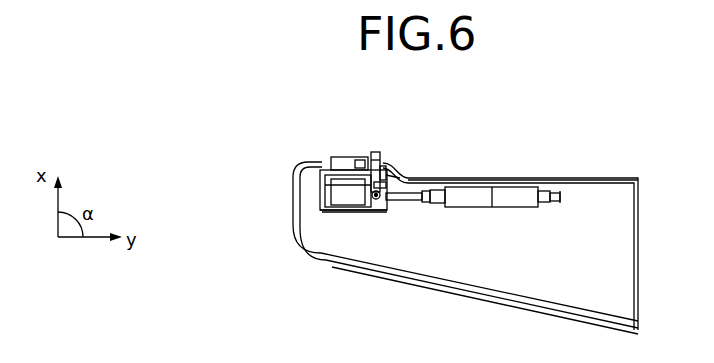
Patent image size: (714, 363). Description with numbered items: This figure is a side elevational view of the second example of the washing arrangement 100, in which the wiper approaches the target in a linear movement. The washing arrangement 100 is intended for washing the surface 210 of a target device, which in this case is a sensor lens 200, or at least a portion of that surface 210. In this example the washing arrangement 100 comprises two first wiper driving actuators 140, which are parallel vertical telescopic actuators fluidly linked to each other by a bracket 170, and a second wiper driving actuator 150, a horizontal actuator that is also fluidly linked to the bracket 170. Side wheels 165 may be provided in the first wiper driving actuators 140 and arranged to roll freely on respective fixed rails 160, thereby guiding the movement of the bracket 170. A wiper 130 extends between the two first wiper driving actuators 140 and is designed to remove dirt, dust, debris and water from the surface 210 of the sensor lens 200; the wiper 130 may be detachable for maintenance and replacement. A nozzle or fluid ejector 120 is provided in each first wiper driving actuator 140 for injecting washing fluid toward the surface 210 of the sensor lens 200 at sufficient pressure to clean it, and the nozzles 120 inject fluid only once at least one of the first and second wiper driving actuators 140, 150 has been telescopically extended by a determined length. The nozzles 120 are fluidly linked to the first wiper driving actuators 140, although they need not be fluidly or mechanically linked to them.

The washing arrangement 100 is at (423, 220).
The nozzle or fluid ejector 120 is at (377, 145).
The wiper 130 is at (385, 160).
The first wiper driving actuator 140 is at (406, 176).
The second wiper driving actuator 150 is at (527, 184).
The fixed rail 160 is at (366, 226).
The side wheel 165 is at (348, 214).
The bracket 170 is at (411, 203).
The sensor lens 200 is at (316, 192).
The surface 210 is at (343, 158).